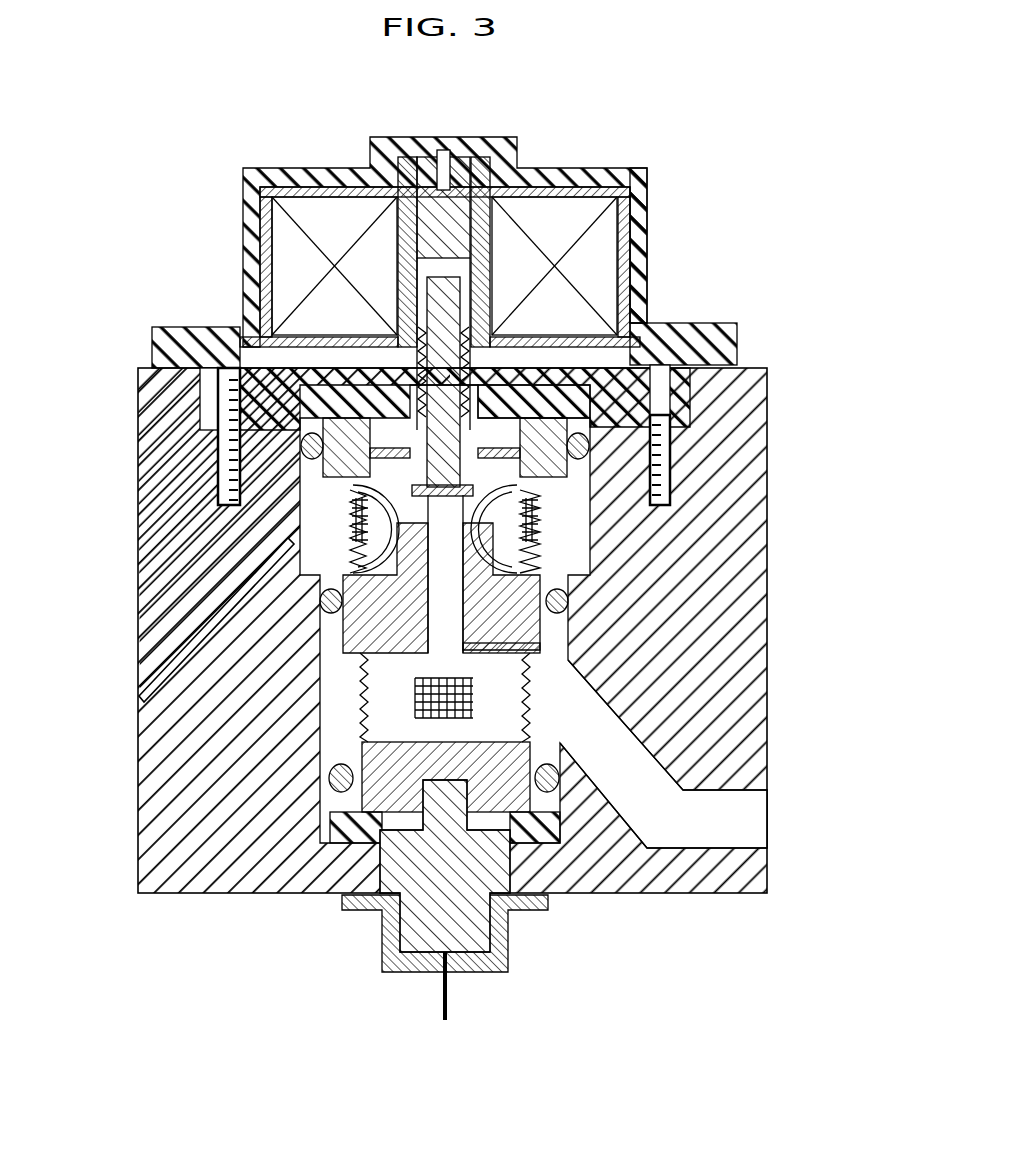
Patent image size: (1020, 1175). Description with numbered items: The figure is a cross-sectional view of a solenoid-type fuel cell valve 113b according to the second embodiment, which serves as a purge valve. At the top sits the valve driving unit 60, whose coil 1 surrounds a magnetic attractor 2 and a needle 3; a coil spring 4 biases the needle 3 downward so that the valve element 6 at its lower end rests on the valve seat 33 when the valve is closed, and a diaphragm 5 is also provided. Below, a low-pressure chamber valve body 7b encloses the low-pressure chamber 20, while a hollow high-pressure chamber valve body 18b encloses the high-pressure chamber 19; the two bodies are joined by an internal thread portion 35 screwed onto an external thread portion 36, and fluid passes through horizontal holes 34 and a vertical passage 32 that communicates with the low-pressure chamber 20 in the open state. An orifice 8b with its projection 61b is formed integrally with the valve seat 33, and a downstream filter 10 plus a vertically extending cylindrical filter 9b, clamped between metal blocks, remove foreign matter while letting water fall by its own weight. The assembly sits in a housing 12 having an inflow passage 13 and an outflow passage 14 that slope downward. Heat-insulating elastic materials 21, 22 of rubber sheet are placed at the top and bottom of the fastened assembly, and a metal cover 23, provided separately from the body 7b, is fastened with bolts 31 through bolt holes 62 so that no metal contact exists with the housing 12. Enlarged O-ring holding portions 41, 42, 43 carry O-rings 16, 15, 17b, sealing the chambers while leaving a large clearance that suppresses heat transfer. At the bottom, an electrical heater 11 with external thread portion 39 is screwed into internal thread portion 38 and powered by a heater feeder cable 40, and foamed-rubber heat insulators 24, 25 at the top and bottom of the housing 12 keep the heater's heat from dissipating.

The solenoid valve 113b is at (203, 95).
The coil 1 is at (560, 285).
The attractor 2 is at (520, 186).
The needle 3 is at (415, 285).
The coil spring 4 is at (440, 330).
The diaphragm 5 is at (225, 395).
The valve element 6 is at (540, 505).
The low-pressure chamber valve body 7b is at (495, 385).
The orifice 8b is at (545, 520).
The cylindrical filter 9b is at (410, 705).
The filter 10 is at (315, 520).
The heater 11 is at (500, 920).
The housing 12 is at (740, 568).
The inflow passage 13 is at (750, 810).
The outflow passage 14 is at (172, 706).
The O-ring 15 is at (320, 585).
The O-ring 16 is at (575, 740).
The O-ring 17b is at (323, 445).
The high-pressure chamber valve body 18b is at (340, 790).
The high-pressure chamber 19 is at (395, 760).
The low-pressure chamber 20 is at (330, 485).
The heat-insulating elastic material 21 is at (300, 405).
The heat-insulating elastic material 22 is at (535, 850).
The cover 23 is at (690, 350).
The heat insulator 24 is at (640, 170).
The heat insulator 25 is at (375, 910).
The bolts 31 is at (215, 340).
The vertical passage 32 is at (560, 600).
The valve seat 33 is at (420, 492).
The horizontal holes 34 is at (350, 520).
The internal thread portion 35 is at (330, 625).
The external thread portion 36 is at (355, 660).
The internal thread portion 38 is at (350, 830).
The external thread portion 39 is at (432, 830).
The heater feeder cable 40 is at (450, 1000).
The O-ring holding portion 41 is at (535, 720).
The O-ring holding portion 42 is at (530, 650).
The O-ring holding portion 43 is at (600, 460).
The valve driving unit 60 is at (478, 137).
The projection 61b is at (545, 560).
The bolt holes 62 is at (670, 460).